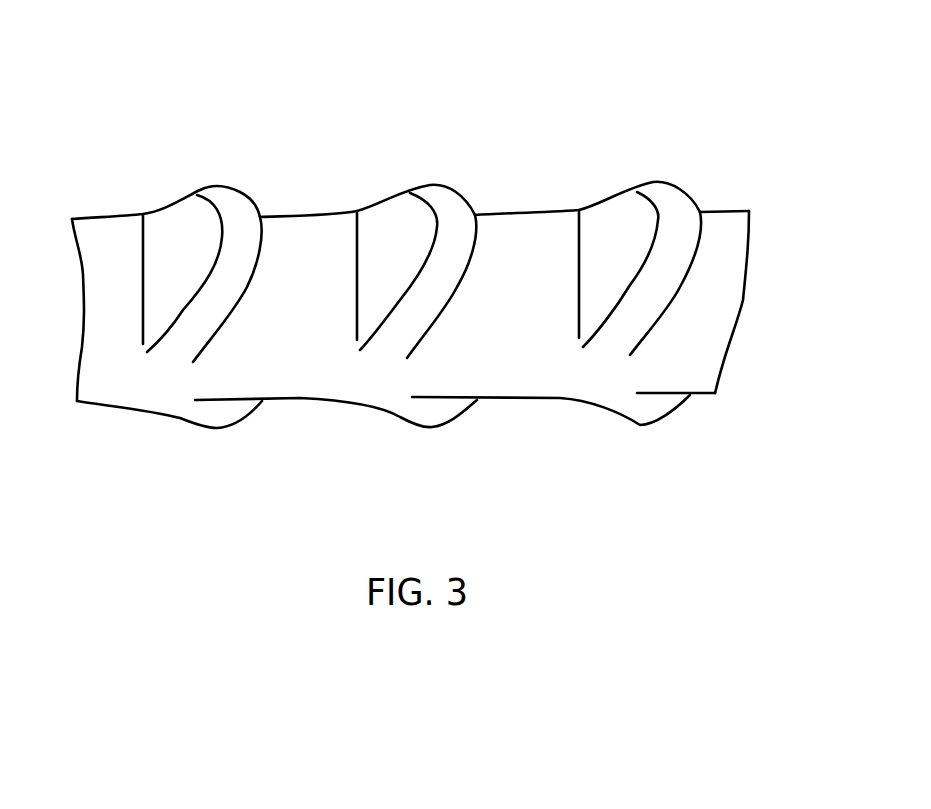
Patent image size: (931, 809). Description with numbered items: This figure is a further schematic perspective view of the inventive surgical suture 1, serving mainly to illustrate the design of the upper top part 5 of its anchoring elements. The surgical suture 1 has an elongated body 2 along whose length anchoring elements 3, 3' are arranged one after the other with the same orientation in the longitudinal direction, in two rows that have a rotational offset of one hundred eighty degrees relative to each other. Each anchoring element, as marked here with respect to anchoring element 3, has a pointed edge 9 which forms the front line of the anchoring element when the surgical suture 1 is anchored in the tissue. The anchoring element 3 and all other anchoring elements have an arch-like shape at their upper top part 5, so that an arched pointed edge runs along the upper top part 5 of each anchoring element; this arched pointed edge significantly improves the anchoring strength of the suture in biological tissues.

The surgical suture 1 is at (534, 111).
The elongated body 2 is at (722, 310).
The anchoring element 3 is at (124, 244).
The anchoring element 3' is at (169, 452).
The upper top part 5 is at (242, 190).
The pointed edge 9 is at (266, 194).